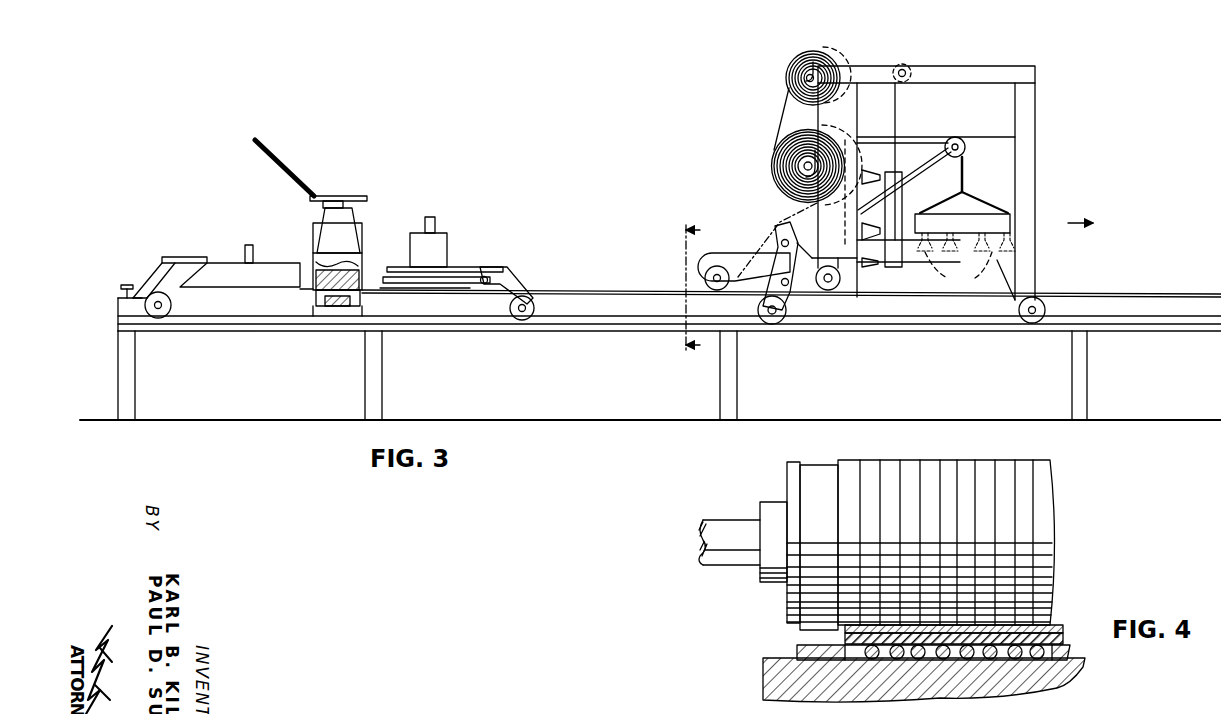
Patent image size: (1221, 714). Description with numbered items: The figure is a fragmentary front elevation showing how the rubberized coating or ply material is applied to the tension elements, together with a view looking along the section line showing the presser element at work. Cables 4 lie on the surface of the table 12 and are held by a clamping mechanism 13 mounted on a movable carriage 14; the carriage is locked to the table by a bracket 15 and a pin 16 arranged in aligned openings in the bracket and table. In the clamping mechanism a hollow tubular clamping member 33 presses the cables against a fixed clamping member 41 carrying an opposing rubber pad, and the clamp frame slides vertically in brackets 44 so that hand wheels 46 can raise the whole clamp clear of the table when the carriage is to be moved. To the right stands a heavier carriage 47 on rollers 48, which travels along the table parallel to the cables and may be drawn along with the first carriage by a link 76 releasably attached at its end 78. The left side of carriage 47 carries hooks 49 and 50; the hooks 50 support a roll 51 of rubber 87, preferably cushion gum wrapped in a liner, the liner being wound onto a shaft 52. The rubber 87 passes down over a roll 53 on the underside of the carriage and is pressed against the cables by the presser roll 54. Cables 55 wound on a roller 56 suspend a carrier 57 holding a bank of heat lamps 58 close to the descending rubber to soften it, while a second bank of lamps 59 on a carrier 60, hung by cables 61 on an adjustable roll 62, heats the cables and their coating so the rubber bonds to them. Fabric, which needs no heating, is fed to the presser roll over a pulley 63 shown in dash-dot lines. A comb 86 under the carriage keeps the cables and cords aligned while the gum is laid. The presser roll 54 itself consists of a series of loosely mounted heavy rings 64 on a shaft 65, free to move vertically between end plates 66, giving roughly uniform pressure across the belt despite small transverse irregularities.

In FIG. 3, the cables 4 is at (1140, 283).
In FIG. 4, the cables 4 is at (1063, 650).
In FIG. 3, the table 12 is at (353, 308).
In FIG. 4, the table 12 is at (770, 670).
In FIG. 3, the clamping mechanism 13 is at (311, 222).
In FIG. 3, the movable carriage 14 is at (267, 263).
In FIG. 3, the bracket 15 is at (163, 257).
In FIG. 3, the pin 16 is at (121, 284).
In FIG. 3, the hollow tubular clamping member 33 is at (363, 276).
In FIG. 3, the fixed clamping member 41 is at (322, 308).
In FIG. 3, the brackets 44 is at (350, 210).
In FIG. 3, the hand wheels 46 is at (318, 196).
In FIG. 3, the carriage 47 is at (987, 72).
In FIG. 3, the rollers 48 is at (790, 316).
In FIG. 3, the hooks 49 is at (806, 78).
In FIG. 3, the hooks 50 is at (803, 168).
In FIG. 3, the roll 51 is at (777, 152).
In FIG. 3, the shaft 52 is at (814, 68).
In FIG. 3, the roll 53 is at (838, 270).
In FIG. 3, the presser roll 54 is at (705, 291).
In FIG. 4, the presser roll 54 is at (939, 537).
In FIG. 3, the cables 55 is at (897, 112).
In FIG. 3, the roller 56 is at (904, 64).
In FIG. 3, the carrier 57 is at (897, 202).
In FIG. 3, the heat lamps 58 is at (873, 172).
In FIG. 3, the lamps 59 is at (966, 259).
In FIG. 3, the carrier 60 is at (1003, 223).
In FIG. 3, the cables 61 is at (965, 160).
In FIG. 3, the roll 62 is at (963, 142).
In FIG. 3, the pulley 63 is at (780, 224).
In FIG. 4, the rings 64 is at (1007, 515).
In FIG. 4, the shaft 65 is at (732, 530).
In FIG. 4, the end plates 66 is at (790, 472).
In FIG. 3, the link 76 is at (455, 277).
In FIG. 3, the attachment point 78 is at (490, 267).
In FIG. 3, the comb 86 is at (873, 292).
In FIG. 3, the rubber 87 is at (593, 292).
In FIG. 4, the rubber 87 is at (845, 640).